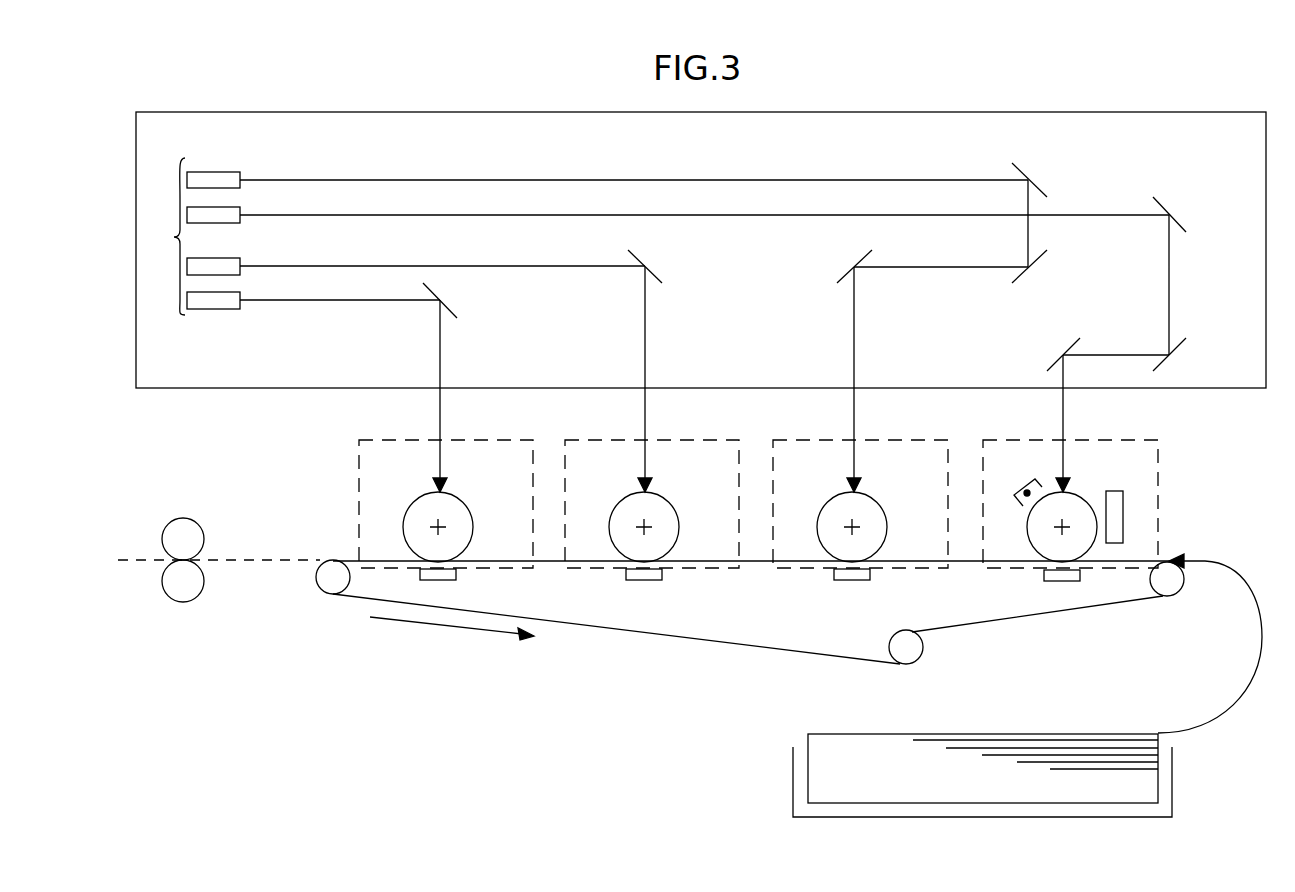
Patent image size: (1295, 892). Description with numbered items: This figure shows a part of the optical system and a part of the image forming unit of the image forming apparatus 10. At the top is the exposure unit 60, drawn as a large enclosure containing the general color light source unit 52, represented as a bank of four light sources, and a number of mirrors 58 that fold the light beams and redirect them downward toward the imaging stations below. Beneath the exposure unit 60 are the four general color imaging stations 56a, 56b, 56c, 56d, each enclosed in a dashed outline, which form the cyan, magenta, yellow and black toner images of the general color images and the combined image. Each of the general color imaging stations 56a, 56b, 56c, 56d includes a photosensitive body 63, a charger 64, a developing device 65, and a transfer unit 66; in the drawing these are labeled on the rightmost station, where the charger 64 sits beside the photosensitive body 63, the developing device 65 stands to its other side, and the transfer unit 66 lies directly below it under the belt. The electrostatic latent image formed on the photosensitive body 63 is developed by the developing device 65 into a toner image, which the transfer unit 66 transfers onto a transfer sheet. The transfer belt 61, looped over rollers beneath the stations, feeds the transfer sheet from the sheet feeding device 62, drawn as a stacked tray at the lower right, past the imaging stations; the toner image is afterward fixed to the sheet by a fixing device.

The image forming apparatus 10 is at (1279, 60).
The general color light source unit 52 is at (191, 236).
The general color imaging station 56a is at (1070, 509).
The general color imaging station 56b is at (898, 436).
The general color imaging station 56c is at (684, 436).
The general color imaging station 56d is at (480, 436).
The mirror 58 is at (1026, 170).
The exposure unit 60 is at (1195, 112).
The transfer belt 61 is at (598, 630).
The sheet feeding device 62 is at (982, 775).
The photosensitive body 63 is at (1028, 526).
The charger 64 is at (1022, 490).
The developing device 65 is at (1112, 490).
The transfer unit 66 is at (1046, 582).